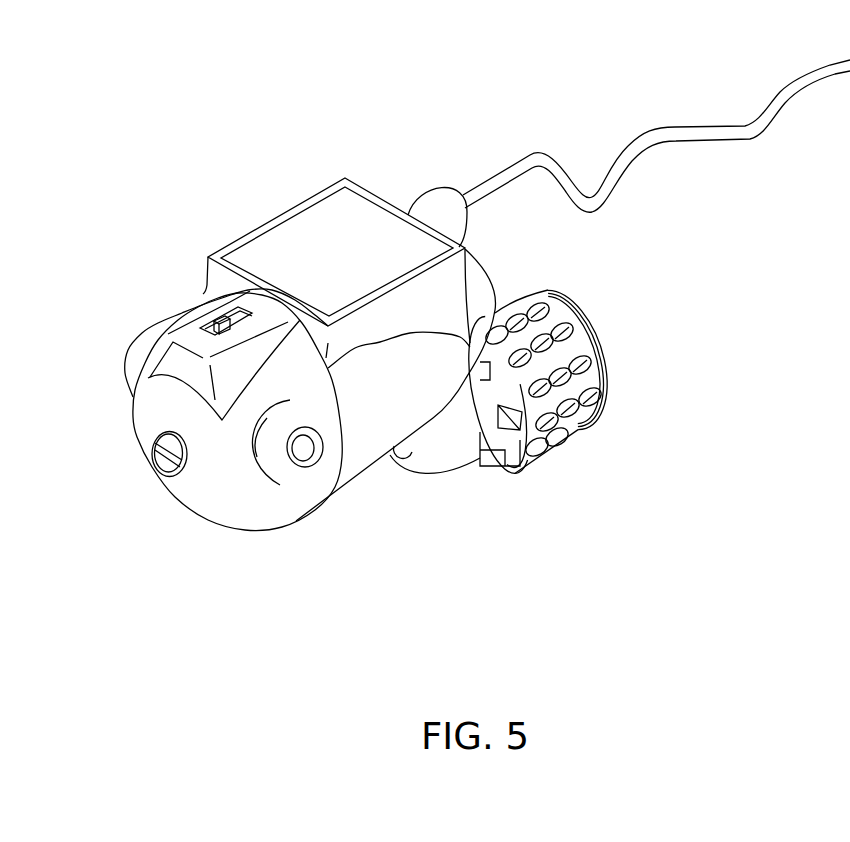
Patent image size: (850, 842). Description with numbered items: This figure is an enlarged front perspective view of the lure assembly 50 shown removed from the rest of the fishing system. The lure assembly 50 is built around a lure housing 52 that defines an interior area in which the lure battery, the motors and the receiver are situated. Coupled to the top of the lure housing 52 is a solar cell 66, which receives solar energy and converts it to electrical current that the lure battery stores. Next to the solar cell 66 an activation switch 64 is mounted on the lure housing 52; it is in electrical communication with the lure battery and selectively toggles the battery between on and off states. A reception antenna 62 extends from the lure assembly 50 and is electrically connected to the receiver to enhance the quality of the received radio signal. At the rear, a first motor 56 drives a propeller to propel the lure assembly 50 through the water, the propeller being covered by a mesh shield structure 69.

The lure assembly 50 is at (385, 100).
The lure housing 52 is at (361, 432).
The first motor 56 is at (453, 432).
The reception antenna 62 is at (689, 135).
The activation switch 64 is at (220, 320).
The solar cell 66 is at (298, 232).
The perforated drum 69 is at (572, 350).